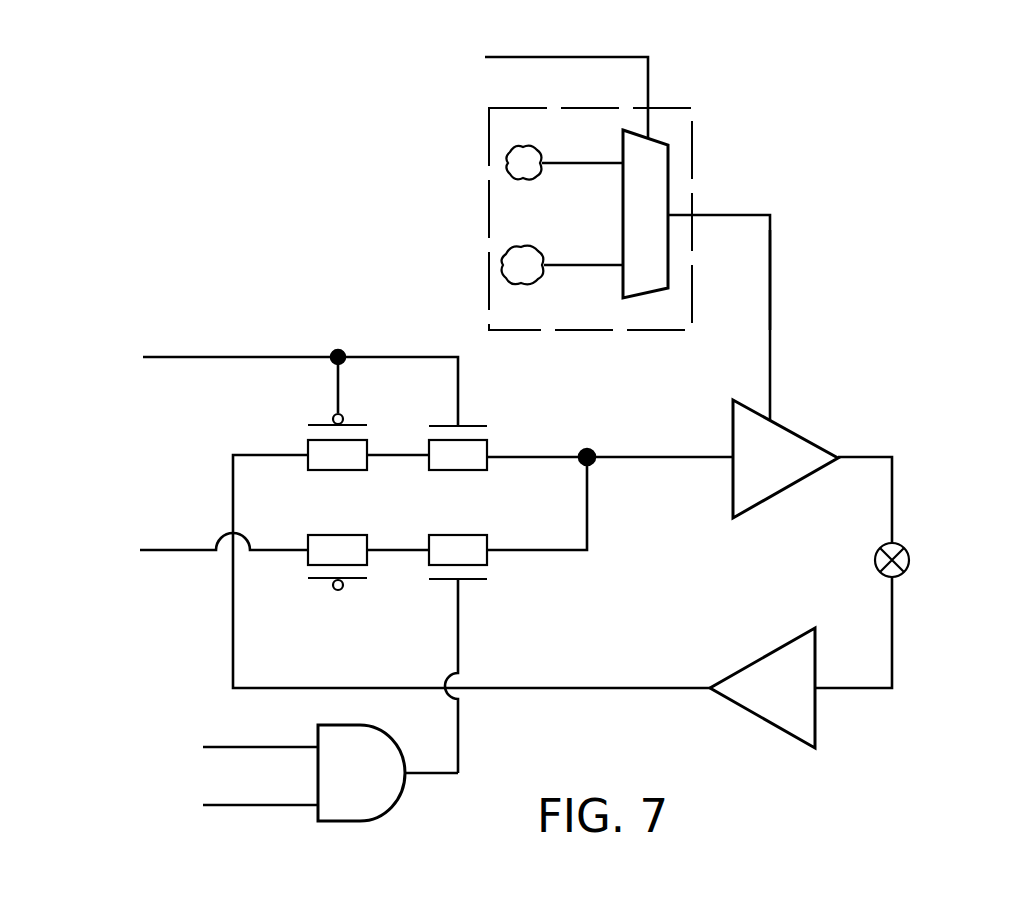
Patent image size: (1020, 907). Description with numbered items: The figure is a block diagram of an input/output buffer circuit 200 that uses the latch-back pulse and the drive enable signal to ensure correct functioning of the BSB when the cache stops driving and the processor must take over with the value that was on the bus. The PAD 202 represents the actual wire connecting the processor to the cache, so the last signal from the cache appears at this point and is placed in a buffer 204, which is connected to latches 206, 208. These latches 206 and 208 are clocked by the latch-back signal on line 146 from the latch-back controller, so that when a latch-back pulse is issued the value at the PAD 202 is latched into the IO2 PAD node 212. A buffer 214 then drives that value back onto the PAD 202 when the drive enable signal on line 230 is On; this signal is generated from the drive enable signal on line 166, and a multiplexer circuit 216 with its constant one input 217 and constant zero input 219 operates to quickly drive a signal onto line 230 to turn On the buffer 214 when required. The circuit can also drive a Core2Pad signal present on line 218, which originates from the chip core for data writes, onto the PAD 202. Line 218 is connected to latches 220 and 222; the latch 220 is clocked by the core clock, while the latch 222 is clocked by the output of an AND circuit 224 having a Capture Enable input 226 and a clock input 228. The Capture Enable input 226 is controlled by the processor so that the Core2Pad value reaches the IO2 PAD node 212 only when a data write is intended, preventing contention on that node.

The input/output buffer circuit 200 is at (270, 208).
The drive enable signal line 166 is at (507, 58).
The multiplexer circuit 216 is at (692, 134).
The logic one constant input 217 is at (597, 160).
The logic zero constant input 219 is at (597, 257).
The drive enable line 230 is at (771, 253).
The buffer 214 is at (818, 442).
The PAD 202 is at (882, 544).
The buffer 204 is at (753, 659).
The IO2 PAD node 212 is at (600, 466).
The latch 206 is at (330, 471).
The latch 208 is at (455, 471).
The latch 220 is at (343, 536).
The latch 222 is at (461, 537).
The latch-back signal line 146 is at (195, 359).
The Core2Pad signal line 218 is at (172, 552).
The Capture Enable input 226 is at (205, 748).
The clock input 228 is at (205, 806).
The AND circuit 224 is at (378, 749).